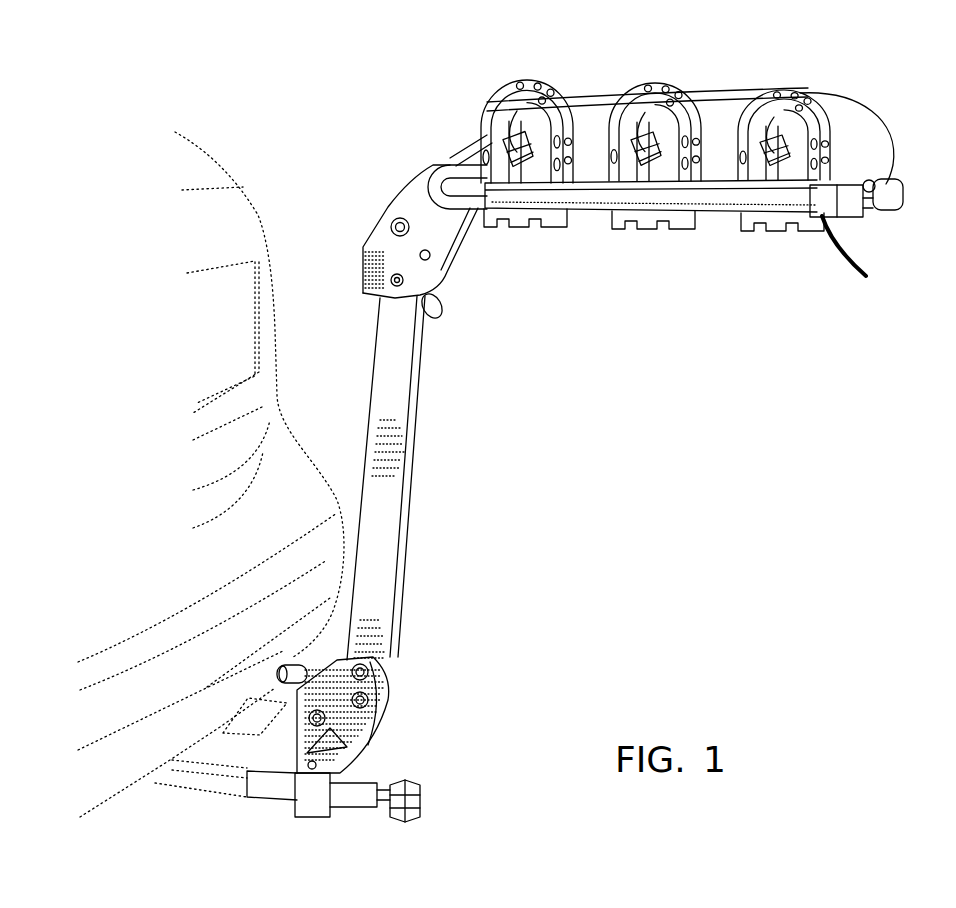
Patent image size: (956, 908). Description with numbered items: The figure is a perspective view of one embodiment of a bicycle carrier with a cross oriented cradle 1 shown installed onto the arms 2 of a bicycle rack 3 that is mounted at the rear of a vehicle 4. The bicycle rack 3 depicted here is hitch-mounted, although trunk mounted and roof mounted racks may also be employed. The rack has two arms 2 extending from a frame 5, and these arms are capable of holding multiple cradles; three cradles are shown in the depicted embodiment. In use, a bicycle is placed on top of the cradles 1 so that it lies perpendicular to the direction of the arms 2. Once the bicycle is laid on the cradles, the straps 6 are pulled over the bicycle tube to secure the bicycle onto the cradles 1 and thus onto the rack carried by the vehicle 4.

The cross oriented cradle 1 is at (497, 67).
The arms 2 is at (837, 238).
The bicycle rack 3 is at (386, 127).
The vehicle 4 is at (267, 160).
The frame 5 is at (478, 280).
The straps 6 is at (830, 123).